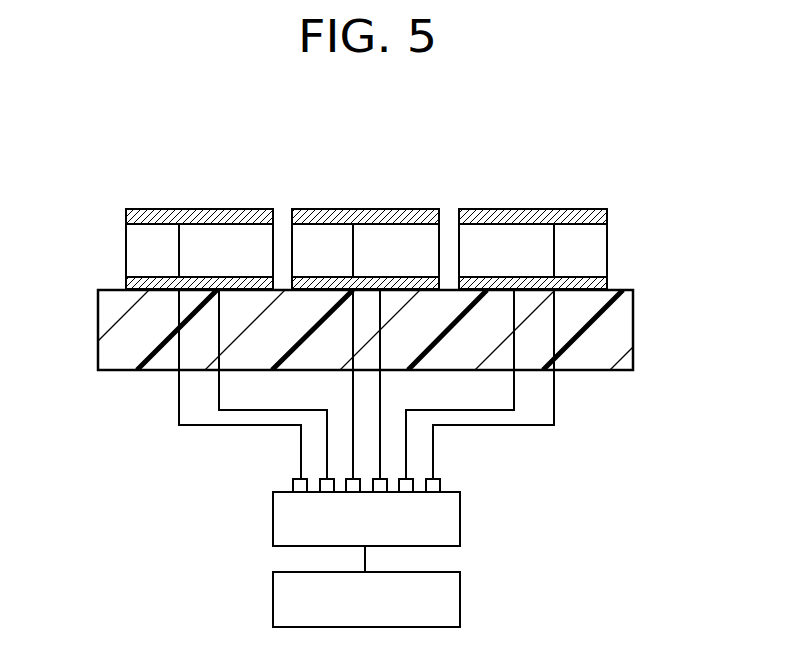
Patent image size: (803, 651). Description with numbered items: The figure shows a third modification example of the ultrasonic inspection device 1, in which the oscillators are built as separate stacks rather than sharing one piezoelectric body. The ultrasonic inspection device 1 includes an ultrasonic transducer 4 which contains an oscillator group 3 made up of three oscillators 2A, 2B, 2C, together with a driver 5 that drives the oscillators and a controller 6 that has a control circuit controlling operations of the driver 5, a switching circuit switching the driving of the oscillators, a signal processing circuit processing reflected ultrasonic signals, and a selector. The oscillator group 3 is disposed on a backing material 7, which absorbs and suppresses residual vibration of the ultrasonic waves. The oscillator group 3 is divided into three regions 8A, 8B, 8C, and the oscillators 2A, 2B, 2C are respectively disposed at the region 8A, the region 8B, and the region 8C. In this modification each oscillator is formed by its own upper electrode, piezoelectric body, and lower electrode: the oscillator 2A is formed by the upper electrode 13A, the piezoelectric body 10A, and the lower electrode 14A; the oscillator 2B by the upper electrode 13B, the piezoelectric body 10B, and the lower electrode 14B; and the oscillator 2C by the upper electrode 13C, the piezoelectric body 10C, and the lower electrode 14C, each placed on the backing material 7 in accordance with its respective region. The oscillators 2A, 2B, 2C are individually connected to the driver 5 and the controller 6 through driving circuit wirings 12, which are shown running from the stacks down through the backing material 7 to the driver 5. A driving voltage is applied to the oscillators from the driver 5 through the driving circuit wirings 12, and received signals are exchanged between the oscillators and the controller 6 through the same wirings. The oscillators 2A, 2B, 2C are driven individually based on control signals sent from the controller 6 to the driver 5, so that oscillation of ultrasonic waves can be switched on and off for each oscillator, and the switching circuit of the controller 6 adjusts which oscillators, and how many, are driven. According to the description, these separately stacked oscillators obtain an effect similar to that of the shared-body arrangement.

The ultrasonic inspection device 1 is at (641, 140).
The oscillator 2A is at (208, 245).
The oscillator 2B is at (367, 245).
The oscillator 2C is at (530, 245).
The oscillator group 3 is at (622, 209).
The ultrasonic transducer 4 is at (691, 208).
The driver 5 is at (460, 518).
The controller 6 is at (460, 600).
The backing material 7 is at (98, 331).
The region 8A is at (280, 210).
The region 8B is at (439, 210).
The region 8C is at (600, 210).
The piezoelectric body 10A is at (136, 238).
The piezoelectric body 10B is at (307, 262).
The piezoelectric body 10C is at (608, 250).
The driving circuit wirings 12 is at (554, 408).
The upper electrode 13A is at (163, 217).
The upper electrode 13B is at (325, 217).
The upper electrode 13C is at (490, 217).
The lower electrode 14A is at (250, 277).
The lower electrode 14B is at (410, 277).
The lower electrode 14C is at (575, 277).